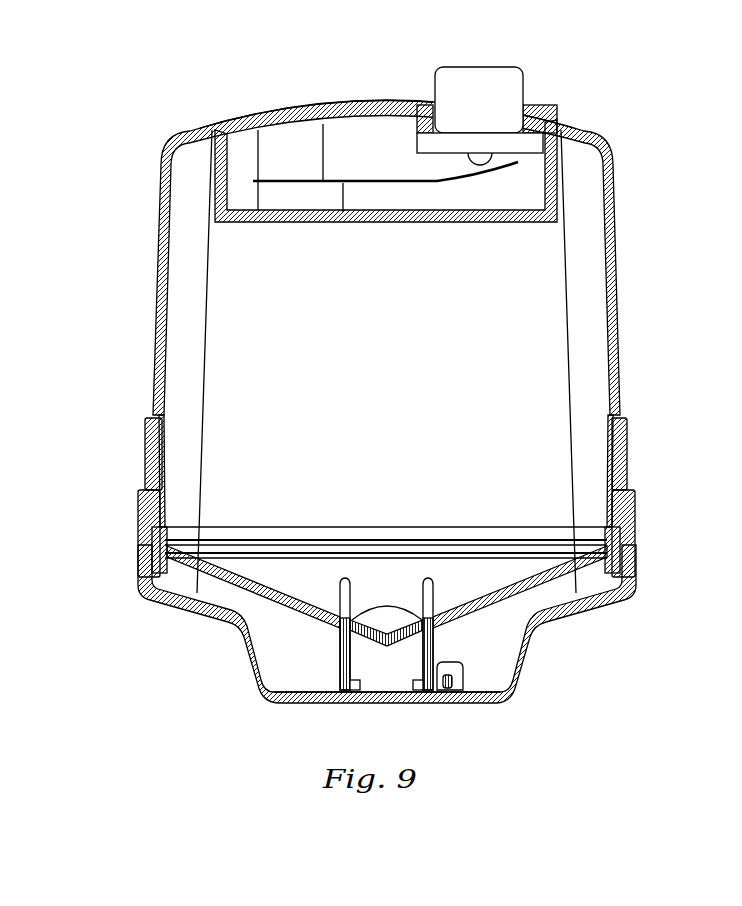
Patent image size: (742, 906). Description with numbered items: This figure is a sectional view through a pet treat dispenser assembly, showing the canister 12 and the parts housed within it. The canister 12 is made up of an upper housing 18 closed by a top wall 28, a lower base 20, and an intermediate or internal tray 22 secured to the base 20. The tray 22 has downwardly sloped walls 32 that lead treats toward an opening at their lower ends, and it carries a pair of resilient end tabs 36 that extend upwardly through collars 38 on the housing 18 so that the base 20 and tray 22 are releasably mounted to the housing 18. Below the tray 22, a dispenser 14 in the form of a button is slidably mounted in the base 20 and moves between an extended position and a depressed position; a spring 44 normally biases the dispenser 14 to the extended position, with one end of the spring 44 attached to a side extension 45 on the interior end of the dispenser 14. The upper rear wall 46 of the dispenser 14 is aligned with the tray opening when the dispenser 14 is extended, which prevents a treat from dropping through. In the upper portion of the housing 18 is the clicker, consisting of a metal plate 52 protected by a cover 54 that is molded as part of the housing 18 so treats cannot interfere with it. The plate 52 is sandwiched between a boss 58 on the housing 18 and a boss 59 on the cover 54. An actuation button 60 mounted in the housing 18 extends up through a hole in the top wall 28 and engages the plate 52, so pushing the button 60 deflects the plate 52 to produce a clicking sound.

The canister 12 is at (613, 268).
The dispenser 14 is at (337, 670).
The upper housing 18 is at (158, 238).
The lower base 20 is at (583, 608).
The internal tray 22 is at (540, 563).
The top wall 28 is at (282, 112).
The downwardly sloped walls 32 is at (457, 597).
The resilient end tabs 36 is at (628, 452).
The collars 38 is at (635, 518).
The spring 44 is at (440, 660).
The side extension 45 is at (457, 663).
The upper rear wall 46 is at (337, 628).
The metal plate 52 is at (447, 177).
The cover 54 is at (477, 222).
The boss 58 is at (307, 157).
The boss 59 is at (343, 212).
The actuation button 60 is at (480, 66).